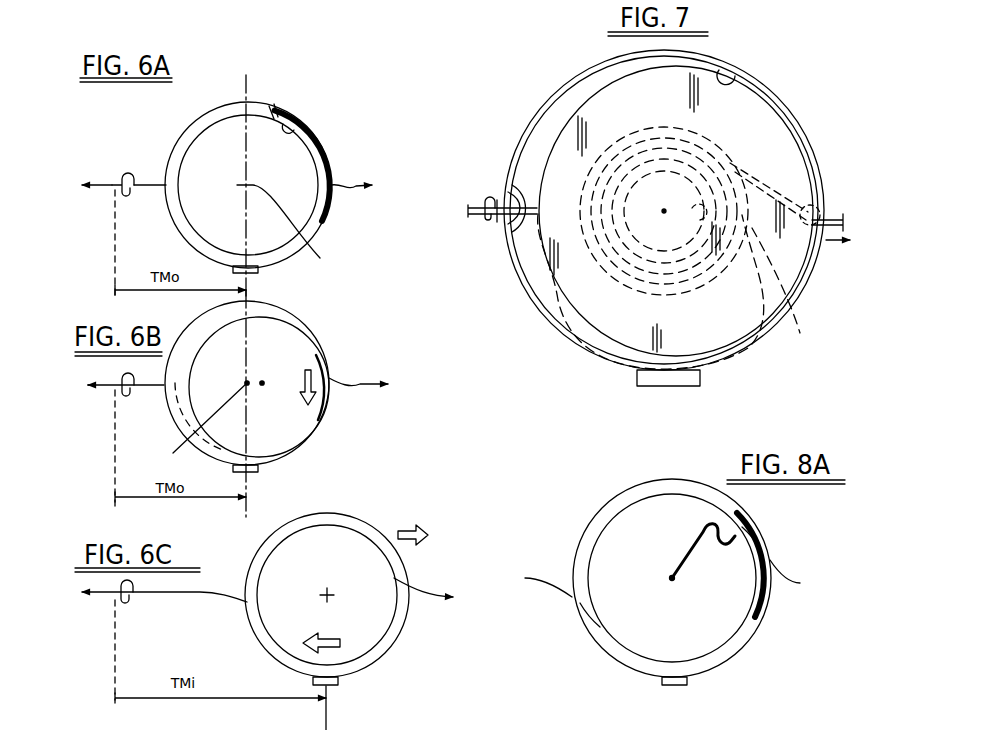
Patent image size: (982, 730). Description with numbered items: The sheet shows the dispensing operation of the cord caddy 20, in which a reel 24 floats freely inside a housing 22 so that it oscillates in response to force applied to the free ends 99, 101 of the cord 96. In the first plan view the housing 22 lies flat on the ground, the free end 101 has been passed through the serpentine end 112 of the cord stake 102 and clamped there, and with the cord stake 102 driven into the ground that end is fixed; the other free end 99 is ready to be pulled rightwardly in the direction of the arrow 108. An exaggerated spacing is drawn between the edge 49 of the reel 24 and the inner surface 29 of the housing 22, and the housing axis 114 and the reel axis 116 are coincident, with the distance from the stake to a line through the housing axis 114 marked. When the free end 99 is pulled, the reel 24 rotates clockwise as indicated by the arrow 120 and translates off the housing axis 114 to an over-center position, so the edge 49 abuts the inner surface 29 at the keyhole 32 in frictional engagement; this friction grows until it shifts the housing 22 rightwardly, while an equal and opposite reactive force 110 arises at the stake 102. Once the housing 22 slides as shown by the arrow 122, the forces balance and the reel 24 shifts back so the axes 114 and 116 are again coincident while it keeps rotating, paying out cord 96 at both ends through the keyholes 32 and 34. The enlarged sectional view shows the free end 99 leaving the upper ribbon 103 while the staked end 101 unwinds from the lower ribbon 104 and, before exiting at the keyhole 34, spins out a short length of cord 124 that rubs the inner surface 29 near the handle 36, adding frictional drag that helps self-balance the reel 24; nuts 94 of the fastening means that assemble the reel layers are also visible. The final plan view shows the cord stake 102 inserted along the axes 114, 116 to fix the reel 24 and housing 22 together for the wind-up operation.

In FIG. 7, the cord caddy 20 is at (548, 72).
In FIG. 8A, the cord caddy 20 is at (764, 642).
In FIG. 6A, the housing 22 is at (212, 104).
In FIG. 8A, the housing 22 is at (748, 658).
In FIG. 6A, the reel 24 is at (236, 106).
In FIG. 7, the reel 24 is at (767, 163).
In FIG. 8A, the reel 24 is at (756, 613).
In FIG. 6A, the inner surface 29 is at (302, 128).
In FIG. 7, the inner surface 29 is at (730, 80).
In FIG. 7, the keyhole 32 is at (812, 175).
In FIG. 7, the keyhole 34 is at (518, 186).
In FIG. 6A, the handle 36 is at (258, 270).
In FIG. 6B, the handle 36 is at (258, 472).
In FIG. 6C, the handle 36 is at (338, 682).
In FIG. 7, the handle 36 is at (690, 382).
In FIG. 8A, the handle 36 is at (690, 680).
In FIG. 6A, the edge 49 is at (277, 113).
In FIG. 7, the edge 49 is at (602, 93).
In FIG. 7, the nuts 94 is at (838, 215).
In FIG. 6A, the cord 96 is at (338, 171).
In FIG. 7, the cord 96 is at (590, 160).
In FIG. 6A, the free end 99 is at (343, 187).
In FIG. 6B, the free end 99 is at (348, 378).
In FIG. 6C, the free end 99 is at (417, 585).
In FIG. 8A, the free end 99 is at (797, 583).
In FIG. 6A, the free end 101 is at (132, 182).
In FIG. 7, the free end 101 is at (475, 213).
In FIG. 8A, the free end 101 is at (547, 578).
In FIG. 6A, the cord stake 102 is at (117, 197).
In FIG. 6B, the cord stake 102 is at (118, 393).
In FIG. 6C, the cord stake 102 is at (120, 605).
In FIG. 7, the cord stake 102 is at (482, 233).
In FIG. 8A, the cord stake 102 is at (690, 540).
In FIG. 7, the ribbon 103 is at (740, 167).
In FIG. 7, the lower ribbon 104 is at (681, 291).
In FIG. 6A, the directional arrow 108 is at (388, 185).
In FIG. 6B, the directional arrow 108 is at (388, 386).
In FIG. 6A, the reactive force 110 is at (93, 182).
In FIG. 6A, the serpentine end 112 is at (118, 177).
In FIG. 7, the serpentine end 112 is at (488, 202).
In FIG. 6B, the housing axis 114 is at (193, 428).
In FIG. 8A, the housing axis 114 is at (671, 580).
In FIG. 6A, the reel axis 116 is at (320, 258).
In FIG. 6B, the reel axis 116 is at (263, 386).
In FIG. 6C, the reel axis 116 is at (333, 593).
In FIG. 8A, the reel axis 116 is at (672, 578).
In FIG. 6B, the arrow 120 is at (305, 370).
In FIG. 6C, the arrow 120 is at (305, 635).
In FIG. 6C, the arrow 122 is at (422, 527).
In FIG. 7, the spin out of cord 124 is at (760, 340).